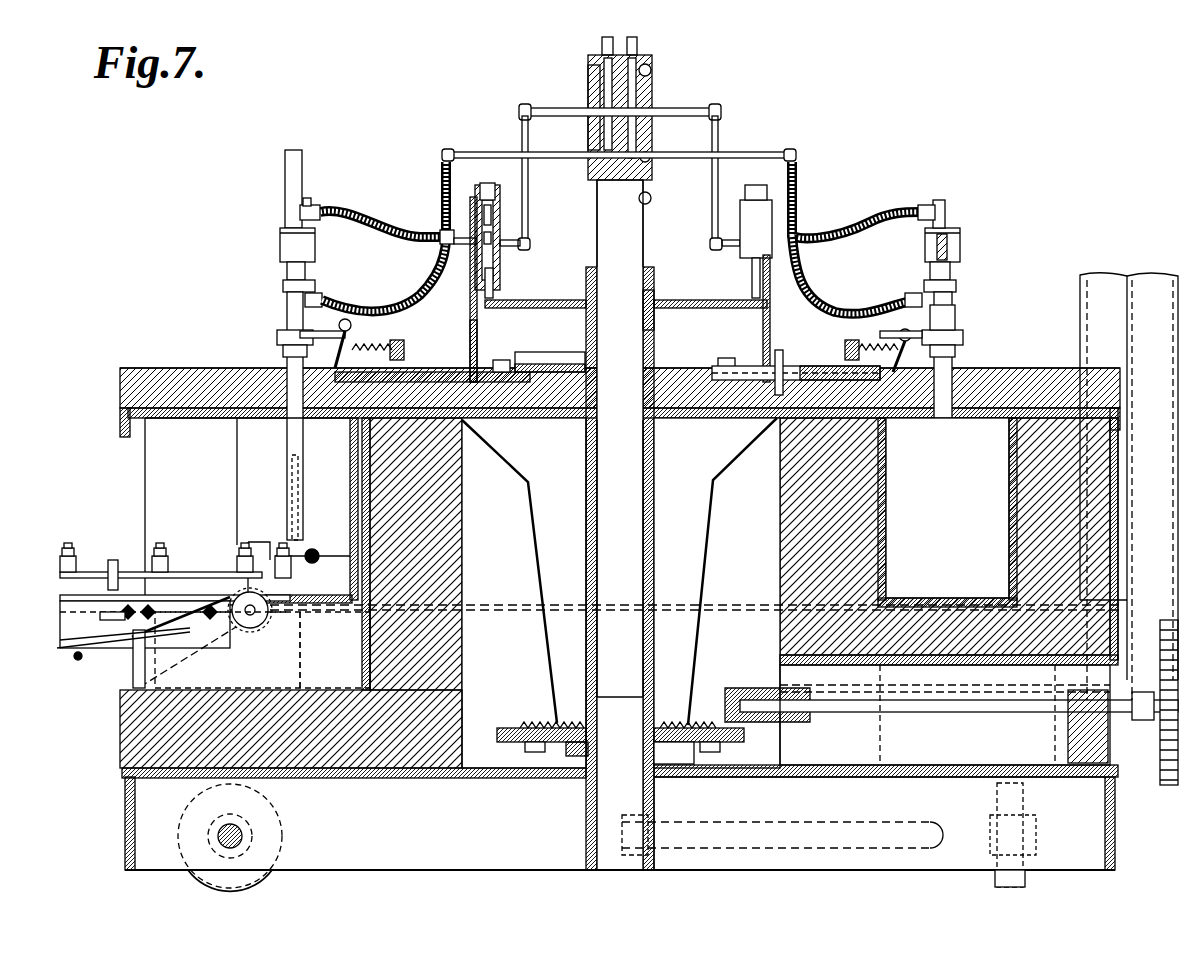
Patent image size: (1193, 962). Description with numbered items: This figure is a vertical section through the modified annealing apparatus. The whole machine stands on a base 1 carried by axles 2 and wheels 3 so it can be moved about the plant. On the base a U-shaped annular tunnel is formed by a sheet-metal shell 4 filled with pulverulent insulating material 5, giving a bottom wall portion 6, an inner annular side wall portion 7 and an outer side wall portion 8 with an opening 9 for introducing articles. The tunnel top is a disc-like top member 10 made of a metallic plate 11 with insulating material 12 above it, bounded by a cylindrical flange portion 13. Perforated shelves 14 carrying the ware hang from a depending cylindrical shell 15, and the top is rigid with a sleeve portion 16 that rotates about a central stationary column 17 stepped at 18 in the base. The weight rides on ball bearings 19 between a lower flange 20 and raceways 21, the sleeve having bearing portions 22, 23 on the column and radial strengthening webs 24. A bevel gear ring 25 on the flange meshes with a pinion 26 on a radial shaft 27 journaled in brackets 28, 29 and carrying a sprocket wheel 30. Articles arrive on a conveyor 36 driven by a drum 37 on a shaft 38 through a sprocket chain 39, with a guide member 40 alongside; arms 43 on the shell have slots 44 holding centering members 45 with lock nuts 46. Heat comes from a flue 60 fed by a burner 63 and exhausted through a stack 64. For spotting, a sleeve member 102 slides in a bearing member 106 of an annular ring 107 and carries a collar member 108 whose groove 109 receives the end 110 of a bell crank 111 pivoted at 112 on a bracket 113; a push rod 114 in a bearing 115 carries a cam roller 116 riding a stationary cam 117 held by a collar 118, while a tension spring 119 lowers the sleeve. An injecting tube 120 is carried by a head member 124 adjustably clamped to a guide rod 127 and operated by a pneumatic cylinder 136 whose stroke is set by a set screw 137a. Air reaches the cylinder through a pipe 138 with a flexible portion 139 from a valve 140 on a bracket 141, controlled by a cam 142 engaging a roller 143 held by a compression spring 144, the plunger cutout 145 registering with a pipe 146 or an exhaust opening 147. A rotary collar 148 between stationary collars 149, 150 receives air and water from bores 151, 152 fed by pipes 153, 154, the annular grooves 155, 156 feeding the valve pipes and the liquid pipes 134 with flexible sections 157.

The base 1 is at (1113, 832).
The axle 2 is at (242, 832).
The wheel 3 is at (265, 870).
The shell 4 is at (465, 534).
The insulating material 5 is at (462, 490).
The bottom wall portion 6 is at (340, 762).
The inner annular side wall portion 7 is at (480, 440).
The outer side wall portion 8 is at (1115, 485).
The opening 9 is at (177, 470).
The top member 10 is at (150, 370).
The metallic plate 11 is at (718, 418).
The insulating material 12 is at (775, 362).
The cylindrical flange portion 13 is at (122, 386).
The perforated shelf 14 is at (325, 600).
The cylindrical shell 15 is at (350, 505).
The sleeve portion 16 is at (655, 502).
The central stationary column 17 is at (640, 460).
The step 18 is at (657, 812).
The ball bearings 19 is at (572, 760).
The lower flange 20 is at (545, 750).
The ball bearing raceways 21 is at (670, 775).
The bearing portion 22 is at (712, 372).
The bearing portion 23 is at (640, 718).
The strengthening web 24 is at (548, 528).
The bevel gear ring 25 is at (505, 722).
The beveled pinion 26 is at (735, 688).
The shaft 27 is at (915, 712).
The bracket 28 is at (805, 738).
The bracket 29 is at (1068, 737).
The sprocket wheel 30 is at (1160, 760).
The conveyor 36 is at (65, 605).
The driving drum 37 is at (290, 630).
The shaft 38 is at (252, 630).
The sprocket chain 39 is at (185, 662).
The guide member 40 is at (195, 572).
The arm 43 is at (255, 540).
The elongated slot 44 is at (312, 570).
The centering member 45 is at (925, 542).
The lock nuts 46 is at (316, 552).
The flue 60 is at (462, 642).
The burner 63 is at (80, 662).
The stack 64 is at (1129, 486).
The sleeve member 102 is at (287, 460).
The bearing member 106 is at (283, 372).
The annular ring 107 is at (250, 424).
The collar member 108 is at (956, 318).
The annular groove 109 is at (277, 336).
The ball-shaped end 110 is at (896, 340).
The bell crank 111 is at (338, 338).
The pivot 112 is at (865, 308).
The bracket 113 is at (352, 332).
The push rod 114 is at (425, 372).
The bearing 115 is at (479, 338).
The cam roller 116 is at (500, 360).
The stationary cam 117 is at (530, 366).
The collar 118 is at (656, 318).
The tension spring 119 is at (398, 345).
The injecting tube 120 is at (300, 495).
The head member 124 is at (287, 268).
The guide rod 127 is at (285, 171).
The pipe 134 is at (548, 165).
The pneumatic cylinder 136 is at (283, 243).
The adjustable set screw 137a is at (945, 205).
The pipe 138 is at (315, 207).
The flexible portion 139 is at (370, 218).
The valve 140 is at (500, 205).
The bracket 141 is at (470, 315).
The stationary cam 142 is at (497, 302).
The roller 143 is at (498, 275).
The compression spring 144 is at (442, 200).
The cutout portion 145 is at (438, 240).
The pipe 146 is at (500, 242).
The exhaust opening 147 is at (498, 222).
The rotary collar 148 is at (654, 90).
The stationary collar 149 is at (590, 72).
The stationary collar 150 is at (651, 200).
The bore 151 is at (590, 88).
The bore 152 is at (652, 70).
The pipe 153 is at (602, 42).
The pipe 154 is at (637, 42).
The annular groove 155 is at (588, 118).
The annular groove 156 is at (650, 163).
The flexible section 157 is at (800, 185).